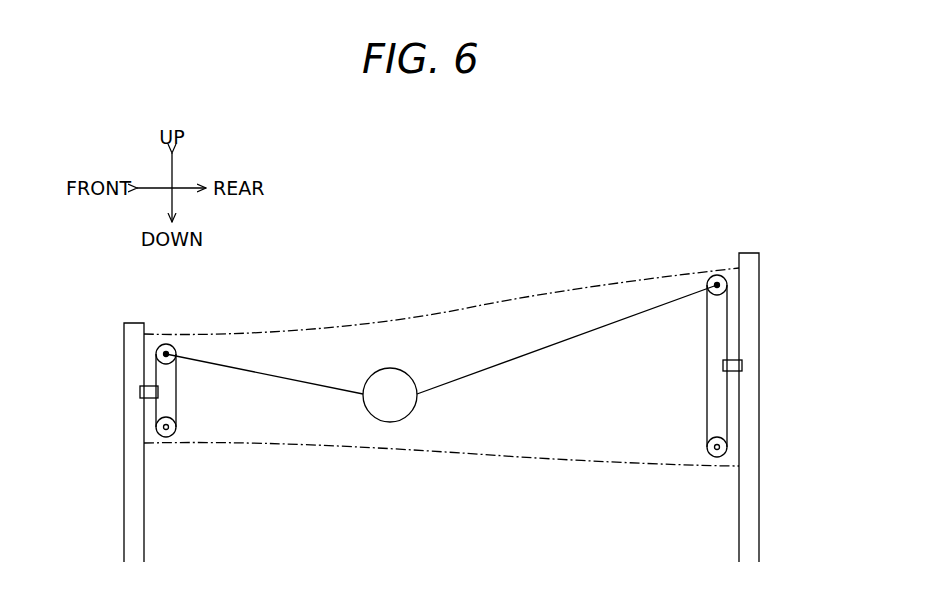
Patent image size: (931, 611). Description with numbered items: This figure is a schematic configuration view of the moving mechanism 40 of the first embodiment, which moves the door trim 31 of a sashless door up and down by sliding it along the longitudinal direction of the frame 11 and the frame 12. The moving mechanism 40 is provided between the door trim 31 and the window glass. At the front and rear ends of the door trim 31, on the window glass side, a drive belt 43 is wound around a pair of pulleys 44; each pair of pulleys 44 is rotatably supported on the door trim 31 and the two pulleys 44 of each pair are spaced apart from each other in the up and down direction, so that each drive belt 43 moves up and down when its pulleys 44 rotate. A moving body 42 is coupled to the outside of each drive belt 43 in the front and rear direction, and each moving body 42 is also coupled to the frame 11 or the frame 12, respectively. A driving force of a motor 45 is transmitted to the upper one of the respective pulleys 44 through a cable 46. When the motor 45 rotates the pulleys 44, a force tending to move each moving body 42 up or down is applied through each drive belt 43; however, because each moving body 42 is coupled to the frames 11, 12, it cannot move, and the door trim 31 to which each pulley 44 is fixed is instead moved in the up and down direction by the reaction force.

The frame 11 is at (124, 530).
The frame 12 is at (759, 522).
The door trim 31 is at (482, 305).
The moving mechanism 40 is at (440, 365).
The moving body 42 is at (149, 385).
The drive belt 43 is at (157, 407).
The pulley 44 is at (168, 344).
The motor 45 is at (382, 368).
The cable 46 is at (233, 369).